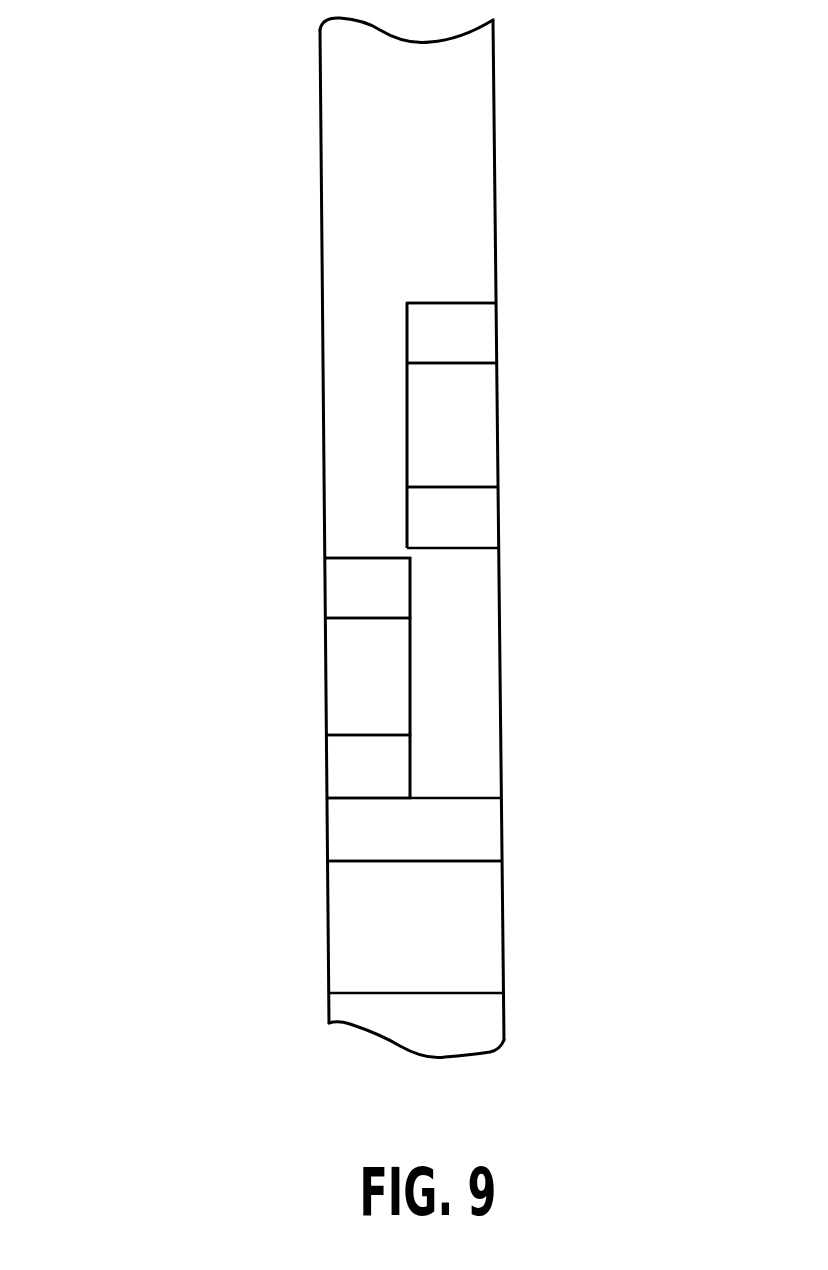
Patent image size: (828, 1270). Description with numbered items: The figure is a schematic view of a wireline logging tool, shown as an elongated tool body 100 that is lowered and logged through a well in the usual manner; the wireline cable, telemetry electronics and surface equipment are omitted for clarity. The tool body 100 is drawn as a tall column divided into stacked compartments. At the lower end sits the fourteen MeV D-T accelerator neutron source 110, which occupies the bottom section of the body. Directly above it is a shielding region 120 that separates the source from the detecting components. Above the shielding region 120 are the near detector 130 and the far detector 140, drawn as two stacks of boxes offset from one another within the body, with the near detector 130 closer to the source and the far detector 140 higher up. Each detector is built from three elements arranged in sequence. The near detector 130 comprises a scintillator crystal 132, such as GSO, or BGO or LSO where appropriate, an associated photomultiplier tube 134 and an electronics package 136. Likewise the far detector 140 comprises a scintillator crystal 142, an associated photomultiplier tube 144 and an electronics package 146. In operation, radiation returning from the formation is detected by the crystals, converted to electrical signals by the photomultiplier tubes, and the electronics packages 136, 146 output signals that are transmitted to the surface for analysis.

The tool body 100 is at (295, 333).
The accelerator neutron source 110 is at (443, 946).
The shielding region 120 is at (448, 851).
The near detector 130 is at (312, 680).
The scintillator crystal 132 is at (337, 790).
The photomultiplier tube 134 is at (396, 702).
The electronics package 136 is at (395, 608).
The far detector 140 is at (508, 443).
The scintillator crystal 142 is at (487, 538).
The photomultiplier tube 144 is at (488, 453).
The electronics package 146 is at (488, 353).